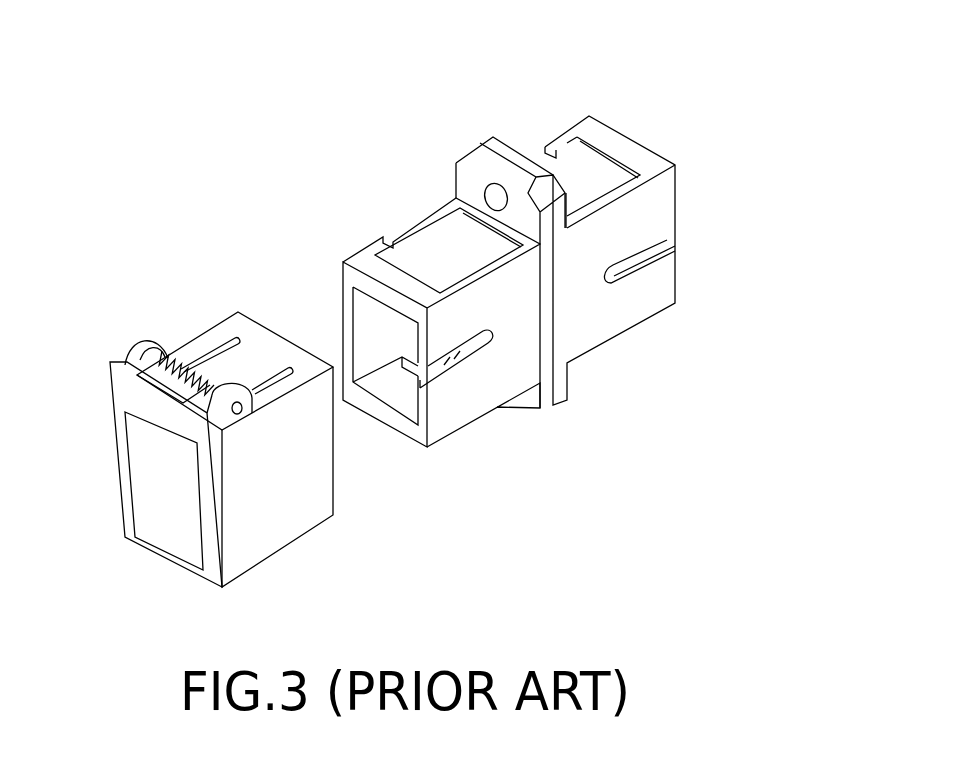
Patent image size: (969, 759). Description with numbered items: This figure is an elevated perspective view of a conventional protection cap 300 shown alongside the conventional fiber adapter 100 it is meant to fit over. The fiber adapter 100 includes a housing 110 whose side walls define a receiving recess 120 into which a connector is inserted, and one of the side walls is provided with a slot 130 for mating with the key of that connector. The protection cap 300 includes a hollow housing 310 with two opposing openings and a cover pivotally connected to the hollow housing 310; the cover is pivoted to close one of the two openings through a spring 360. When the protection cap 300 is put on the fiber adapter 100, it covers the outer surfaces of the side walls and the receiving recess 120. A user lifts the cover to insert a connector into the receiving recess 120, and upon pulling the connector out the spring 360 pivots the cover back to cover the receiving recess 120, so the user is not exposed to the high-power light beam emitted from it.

The fiber adapter 100 is at (600, 92).
The housing 110 is at (368, 230).
The receiving recess 120 is at (402, 378).
The slot 130 is at (448, 363).
The protection cap 300 is at (230, 243).
The hollow housing 310 is at (222, 328).
The spring 360 is at (185, 365).